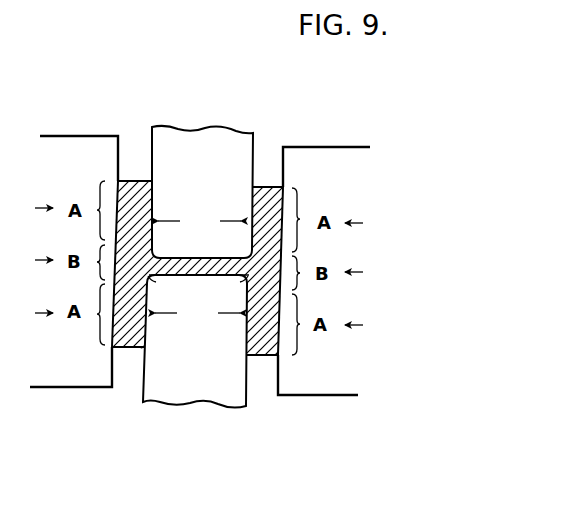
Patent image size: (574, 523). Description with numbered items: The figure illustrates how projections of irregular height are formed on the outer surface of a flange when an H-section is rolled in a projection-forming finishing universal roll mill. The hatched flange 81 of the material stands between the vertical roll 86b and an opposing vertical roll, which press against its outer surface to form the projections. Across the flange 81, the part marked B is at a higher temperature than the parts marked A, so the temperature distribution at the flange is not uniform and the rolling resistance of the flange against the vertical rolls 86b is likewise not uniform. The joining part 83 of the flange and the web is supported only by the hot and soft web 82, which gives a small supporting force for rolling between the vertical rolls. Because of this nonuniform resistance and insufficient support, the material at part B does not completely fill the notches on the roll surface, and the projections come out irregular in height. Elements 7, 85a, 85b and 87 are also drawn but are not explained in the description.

The hatched sealing member 7 is at (133, 178).
The flange 81 is at (128, 350).
The web 82 is at (199, 256).
The joining part of the flange and the web 83 is at (247, 273).
The upper block 85a is at (149, 142).
The lower block 85b is at (185, 408).
The vertical roll 86b is at (80, 133).
The right hatched column 87 is at (267, 184).